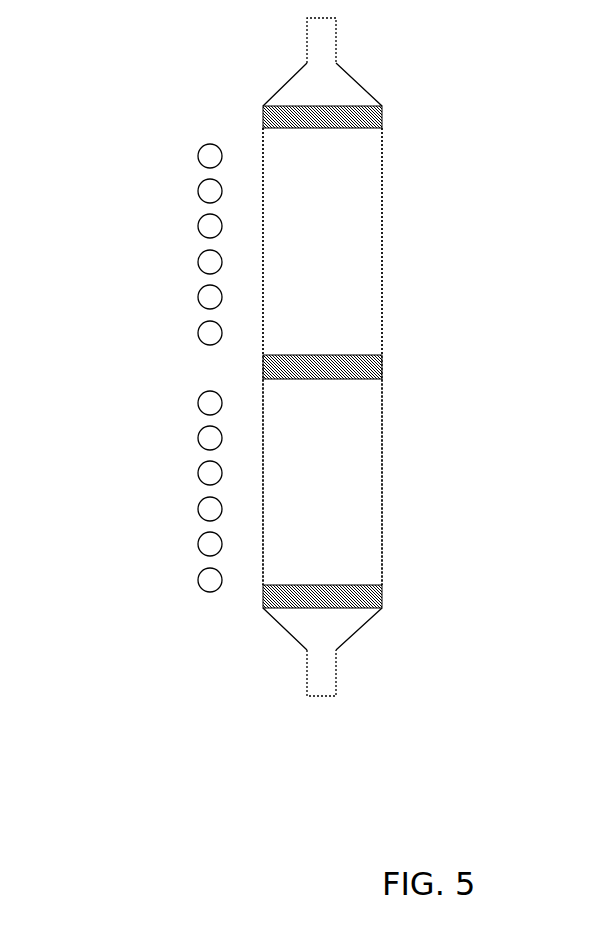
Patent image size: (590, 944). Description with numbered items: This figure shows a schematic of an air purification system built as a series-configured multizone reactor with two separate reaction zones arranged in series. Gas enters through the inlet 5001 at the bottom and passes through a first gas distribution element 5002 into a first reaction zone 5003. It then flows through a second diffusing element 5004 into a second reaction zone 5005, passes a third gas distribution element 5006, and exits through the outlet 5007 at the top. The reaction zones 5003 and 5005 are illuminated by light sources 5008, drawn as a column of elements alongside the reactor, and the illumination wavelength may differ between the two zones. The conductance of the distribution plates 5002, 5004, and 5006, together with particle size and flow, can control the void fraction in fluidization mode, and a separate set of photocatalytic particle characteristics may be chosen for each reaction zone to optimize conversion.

The inlet 5001 is at (355, 675).
The first gas distribution element 5002 is at (396, 593).
The first reaction zone 5003 is at (390, 490).
The second diffusing element 5004 is at (392, 368).
The second reaction zone 5005 is at (390, 274).
The third gas distribution element 5006 is at (390, 117).
The outlet 5007 is at (355, 40).
The light sources 5008 is at (193, 226).